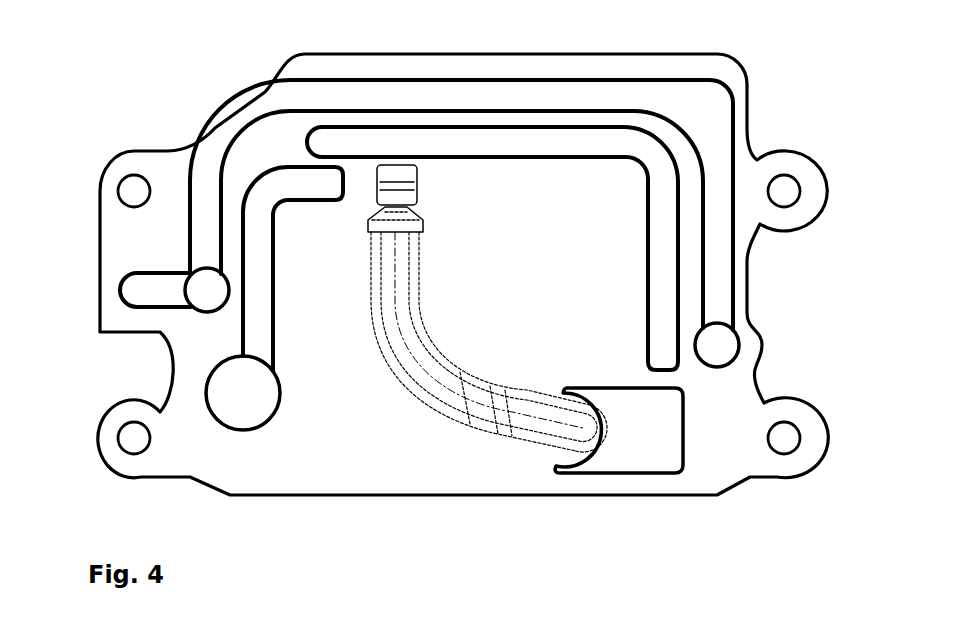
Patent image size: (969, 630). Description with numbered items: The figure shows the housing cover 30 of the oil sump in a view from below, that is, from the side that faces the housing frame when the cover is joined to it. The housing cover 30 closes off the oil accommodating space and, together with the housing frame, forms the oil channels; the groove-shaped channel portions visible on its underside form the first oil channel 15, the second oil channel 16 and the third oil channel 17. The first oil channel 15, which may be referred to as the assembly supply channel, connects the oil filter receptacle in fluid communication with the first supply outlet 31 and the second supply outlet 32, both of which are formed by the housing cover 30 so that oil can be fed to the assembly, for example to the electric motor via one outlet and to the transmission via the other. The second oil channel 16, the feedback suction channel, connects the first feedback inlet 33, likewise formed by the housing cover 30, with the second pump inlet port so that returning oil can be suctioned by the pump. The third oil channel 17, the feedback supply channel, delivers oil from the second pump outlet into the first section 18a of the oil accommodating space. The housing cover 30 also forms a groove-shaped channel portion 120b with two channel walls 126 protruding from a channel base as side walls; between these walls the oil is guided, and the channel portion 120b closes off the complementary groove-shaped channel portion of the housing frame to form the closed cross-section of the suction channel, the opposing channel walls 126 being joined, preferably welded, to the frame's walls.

The first oil channel 15 is at (327, 97).
The second oil channel 16 is at (272, 198).
The third oil channel 17 is at (653, 155).
The first section 18a is at (622, 442).
The housing cover 30 is at (772, 102).
The first supply outlet 31 is at (710, 348).
The second supply outlet 32 is at (205, 290).
The first feedback inlet 33 is at (247, 392).
The groove-shaped channel portion 120b is at (448, 366).
The channel walls 126 is at (420, 260).